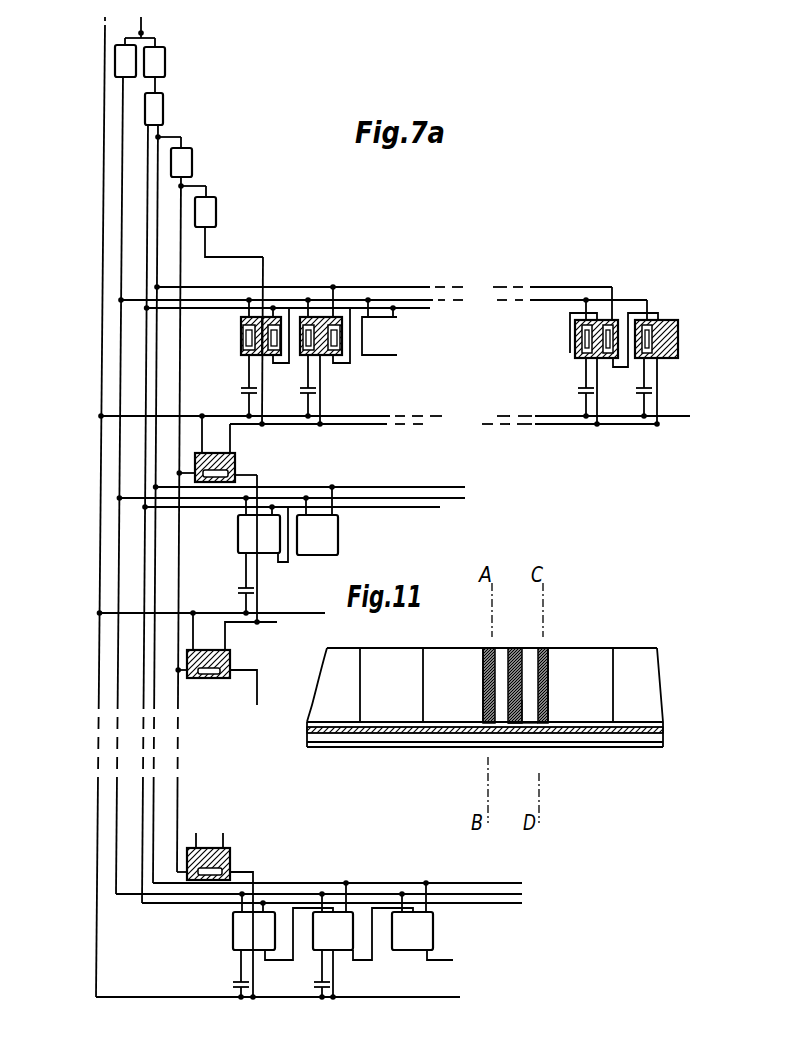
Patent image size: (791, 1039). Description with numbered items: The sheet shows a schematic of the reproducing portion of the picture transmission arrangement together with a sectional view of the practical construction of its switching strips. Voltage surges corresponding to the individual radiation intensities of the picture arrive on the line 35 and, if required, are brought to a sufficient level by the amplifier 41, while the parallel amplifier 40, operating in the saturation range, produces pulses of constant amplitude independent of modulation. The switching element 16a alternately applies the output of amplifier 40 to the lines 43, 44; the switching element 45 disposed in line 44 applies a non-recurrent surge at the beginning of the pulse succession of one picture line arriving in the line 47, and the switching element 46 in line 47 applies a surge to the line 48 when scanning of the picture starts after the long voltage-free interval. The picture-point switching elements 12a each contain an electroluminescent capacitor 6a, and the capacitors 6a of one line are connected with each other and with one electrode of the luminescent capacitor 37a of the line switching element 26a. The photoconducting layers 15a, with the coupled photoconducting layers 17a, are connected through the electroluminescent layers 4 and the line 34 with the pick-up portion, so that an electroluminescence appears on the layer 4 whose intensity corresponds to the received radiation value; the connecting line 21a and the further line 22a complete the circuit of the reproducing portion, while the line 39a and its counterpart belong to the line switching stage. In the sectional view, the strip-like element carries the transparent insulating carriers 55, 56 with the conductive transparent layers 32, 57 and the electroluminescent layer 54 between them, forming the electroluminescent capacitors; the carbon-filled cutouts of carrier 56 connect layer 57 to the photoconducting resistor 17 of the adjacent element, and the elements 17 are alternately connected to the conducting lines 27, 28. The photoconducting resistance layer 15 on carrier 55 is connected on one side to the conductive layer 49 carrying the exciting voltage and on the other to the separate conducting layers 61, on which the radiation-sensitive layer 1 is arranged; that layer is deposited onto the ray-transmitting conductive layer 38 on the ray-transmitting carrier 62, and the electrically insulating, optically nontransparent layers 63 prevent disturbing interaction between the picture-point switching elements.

In FIG. 7A, the line 34 is at (105, 28).
In FIG. 7A, the line 35 is at (141, 20).
In FIG. 7A, the amplifier 41 is at (125, 61).
In FIG. 7A, the amplifier 40 is at (157, 60).
In FIG. 7A, the switching element 16a is at (154, 107).
In FIG. 7A, the switching element 45 is at (186, 162).
In FIG. 7A, the switching element 46 is at (211, 210).
In FIG. 7A, the line 43 is at (181, 244).
In FIG. 7A, the line 44 is at (157, 275).
In FIG. 7A, the line 47 is at (206, 243).
In FIG. 7A, the line 48 is at (264, 265).
In FIG. 7A, the photoconducting layer 17a is at (282, 318).
In FIG. 7A, the photoconducting layer 15a is at (241, 330).
In FIG. 7A, the electroluminescent capacitor 6a is at (243, 345).
In FIG. 7A, the picture-point switching element 12a is at (246, 356).
In FIG. 7A, the electroluminescent layer 4 is at (241, 392).
In FIG. 7A, the connecting line 21a is at (357, 415).
In FIG. 7A, the line 22a is at (348, 427).
In FIG. 7A, the luminescent capacitor 37a is at (235, 455).
In FIG. 7A, the line switching element 26a is at (237, 462).
In FIG. 7A, the contact 39a is at (237, 477).
In FIG. 11, the line 27 is at (487, 655).
In FIG. 11, the photoconducting resistor 17 is at (484, 688).
In FIG. 11, the carrier 56 is at (502, 660).
In FIG. 11, the conductive transparent layer 57 is at (515, 660).
In FIG. 11, the carrier 55 is at (530, 663).
In FIG. 11, the electrically conductive layer 49 is at (540, 654).
In FIG. 11, the photoconducting resistance layer 15 is at (548, 664).
In FIG. 11, the insulating nontransparent layer 63 is at (547, 685).
In FIG. 11, the carrier 62 is at (338, 742).
In FIG. 11, the electrically conductive layer 38 is at (385, 732).
In FIG. 11, the radiation-sensitive layer 1 is at (432, 723).
In FIG. 11, the line 28 is at (485, 723).
In FIG. 11, the conducting layer 61 is at (517, 740).
In FIG. 11, the electroluminescent layer 54 is at (523, 710).
In FIG. 11, the conductive transparent layer 32 is at (527, 723).